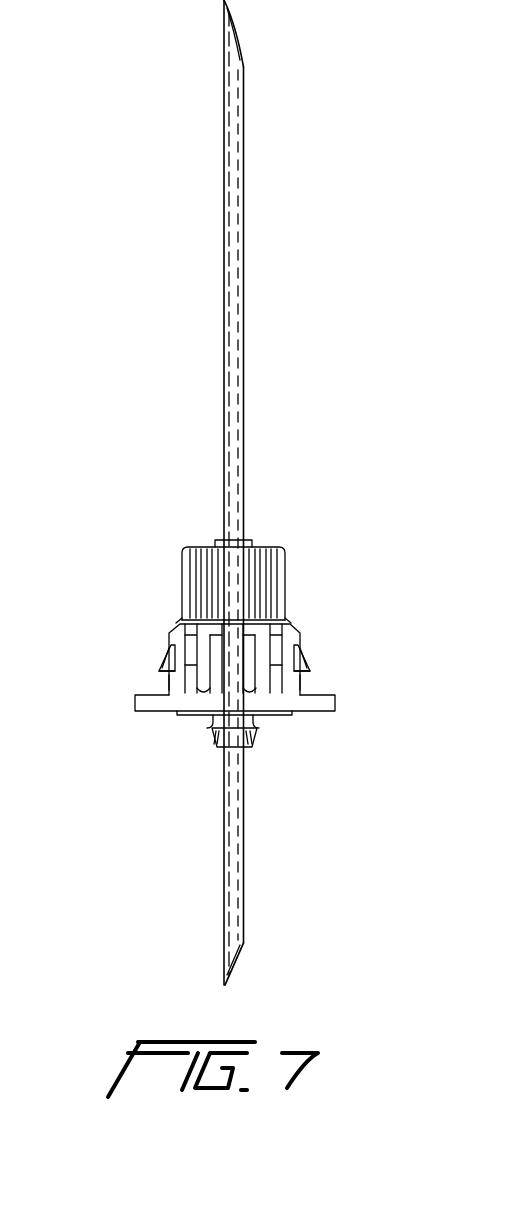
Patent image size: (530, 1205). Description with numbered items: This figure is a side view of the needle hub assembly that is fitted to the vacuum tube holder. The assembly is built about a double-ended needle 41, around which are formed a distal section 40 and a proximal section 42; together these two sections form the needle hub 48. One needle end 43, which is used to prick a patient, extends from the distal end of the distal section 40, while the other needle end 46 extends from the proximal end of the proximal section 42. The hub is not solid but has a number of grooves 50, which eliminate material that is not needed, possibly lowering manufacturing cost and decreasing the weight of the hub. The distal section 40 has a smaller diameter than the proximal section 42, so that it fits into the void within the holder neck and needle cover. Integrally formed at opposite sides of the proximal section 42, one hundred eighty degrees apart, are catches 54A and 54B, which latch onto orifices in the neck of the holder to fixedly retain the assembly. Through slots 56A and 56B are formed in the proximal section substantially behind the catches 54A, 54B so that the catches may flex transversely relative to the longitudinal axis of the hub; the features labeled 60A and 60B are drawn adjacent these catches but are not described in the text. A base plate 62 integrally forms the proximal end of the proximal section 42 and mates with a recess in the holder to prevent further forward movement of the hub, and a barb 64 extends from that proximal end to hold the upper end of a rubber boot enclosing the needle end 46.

The distal section 40 is at (293, 553).
The double-ended needle 41 is at (223, 382).
The proximal section 42 is at (307, 682).
The needle end 43 is at (232, 30).
The needle end 46 is at (238, 957).
The needle hub 48 is at (208, 715).
The grooves 50 is at (217, 683).
The catch 54A is at (162, 658).
The catch 54B is at (305, 650).
The through slot 56A is at (183, 637).
The through slot 56B is at (272, 640).
The tab base 60A is at (168, 675).
The tab base 60B is at (307, 677).
The base plate 62 is at (337, 707).
The barb 64 is at (257, 742).